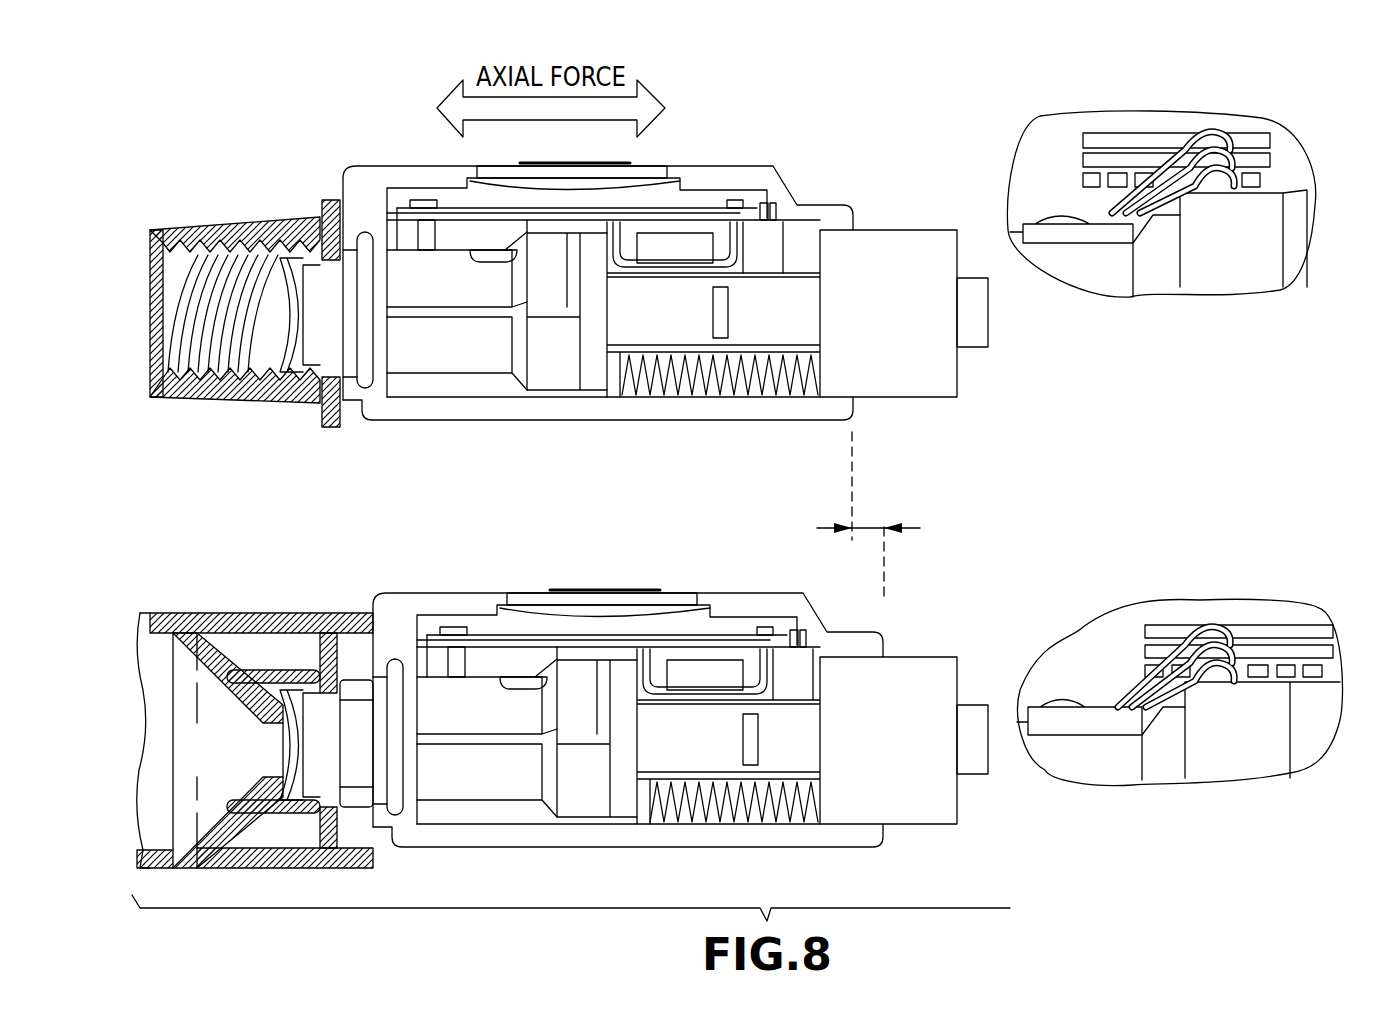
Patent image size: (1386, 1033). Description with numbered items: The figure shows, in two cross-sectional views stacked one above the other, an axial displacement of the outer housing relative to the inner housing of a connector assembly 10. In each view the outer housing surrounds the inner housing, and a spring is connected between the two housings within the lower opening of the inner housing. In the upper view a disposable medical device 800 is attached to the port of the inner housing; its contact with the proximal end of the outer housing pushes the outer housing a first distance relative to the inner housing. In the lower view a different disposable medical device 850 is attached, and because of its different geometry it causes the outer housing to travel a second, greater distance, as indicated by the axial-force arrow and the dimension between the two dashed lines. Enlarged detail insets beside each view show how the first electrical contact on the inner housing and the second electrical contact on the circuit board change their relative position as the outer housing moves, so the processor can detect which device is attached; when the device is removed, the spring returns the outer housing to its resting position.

The connector assembly 10 is at (925, 135).
The disposable medical device 800 is at (240, 226).
The disposable medical device 850 is at (277, 613).